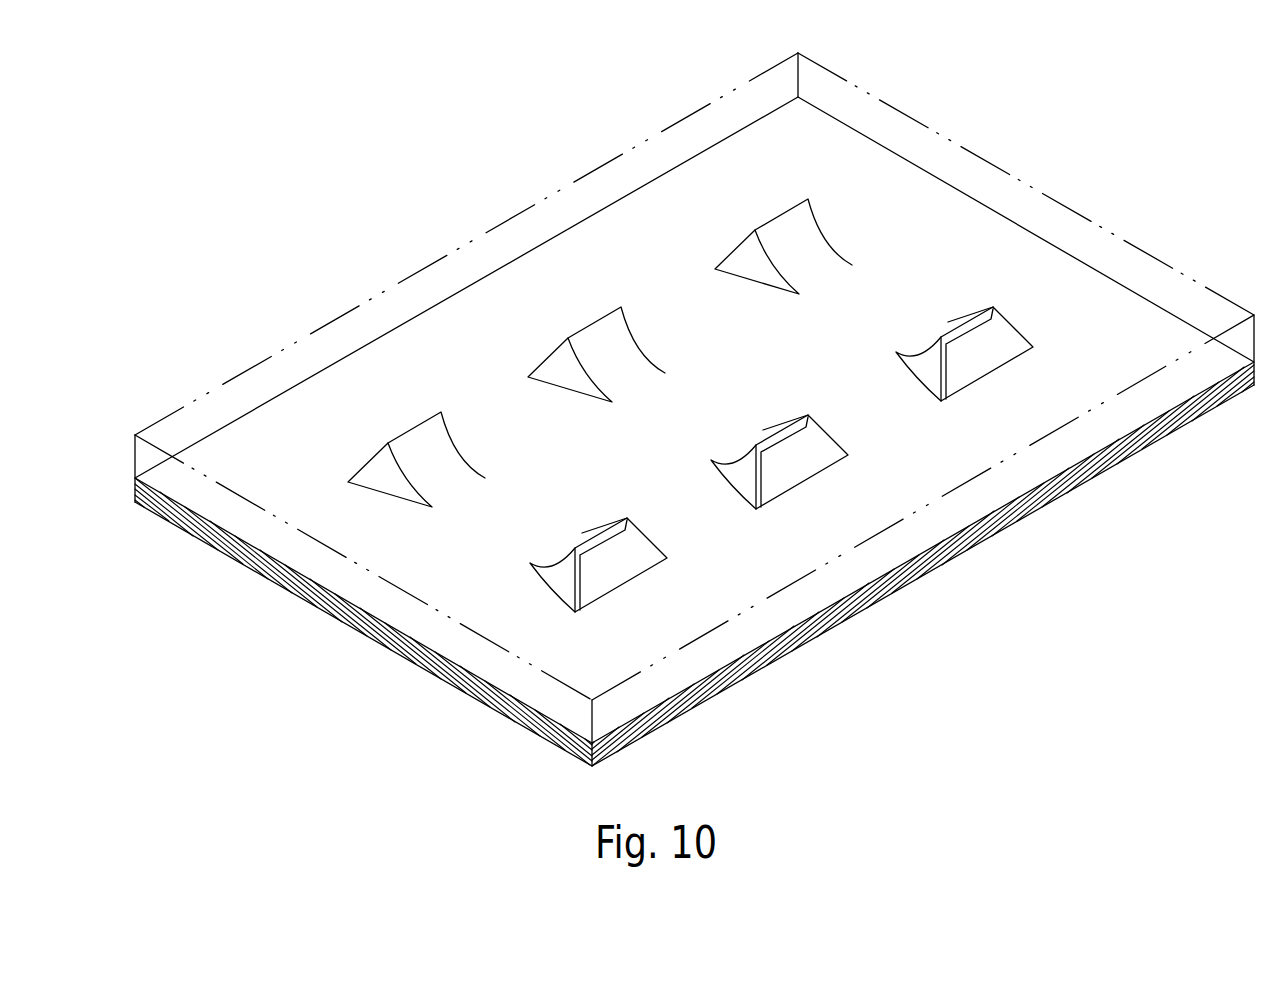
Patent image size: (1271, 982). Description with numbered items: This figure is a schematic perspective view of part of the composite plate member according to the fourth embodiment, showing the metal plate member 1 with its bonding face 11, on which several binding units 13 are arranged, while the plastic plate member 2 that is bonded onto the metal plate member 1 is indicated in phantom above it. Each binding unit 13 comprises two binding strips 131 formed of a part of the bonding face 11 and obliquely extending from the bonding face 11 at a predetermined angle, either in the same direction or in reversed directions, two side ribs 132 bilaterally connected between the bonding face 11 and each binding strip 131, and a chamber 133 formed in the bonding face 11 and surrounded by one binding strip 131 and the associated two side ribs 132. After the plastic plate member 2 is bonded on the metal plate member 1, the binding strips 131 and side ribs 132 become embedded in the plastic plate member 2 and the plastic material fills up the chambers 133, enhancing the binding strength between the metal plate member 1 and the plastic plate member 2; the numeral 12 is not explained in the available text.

The metal plate member 1 is at (694, 409).
The bonding face 11 is at (465, 287).
The bottom surface 12 is at (923, 576).
The binding unit 13 is at (686, 418).
The binding strip 131 is at (418, 428).
The side rib 132 is at (377, 467).
The chamber 133 is at (980, 370).
The plastic plate member 2 is at (380, 190).